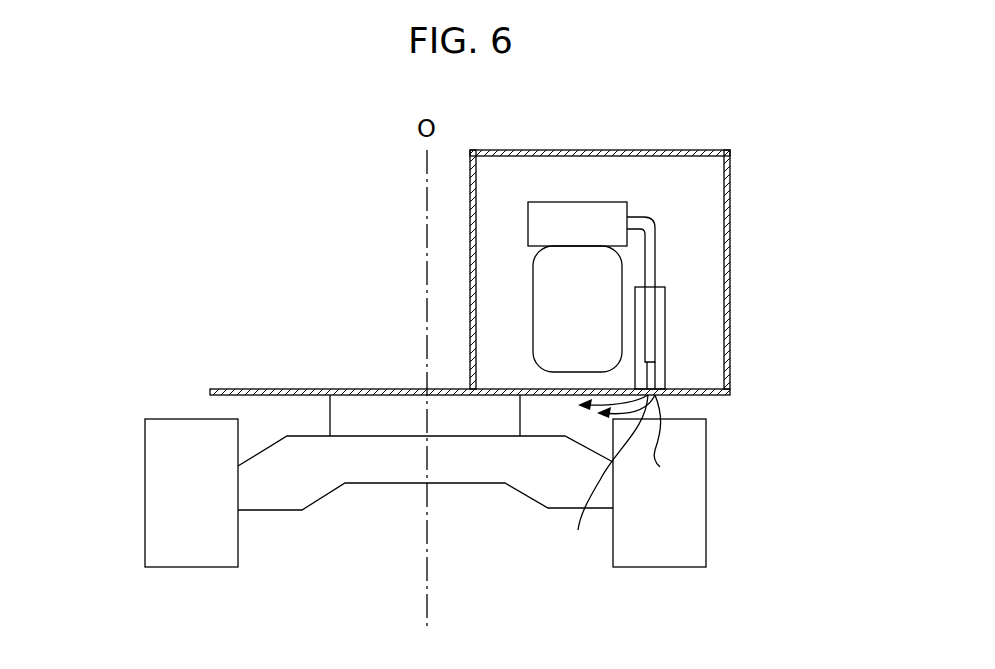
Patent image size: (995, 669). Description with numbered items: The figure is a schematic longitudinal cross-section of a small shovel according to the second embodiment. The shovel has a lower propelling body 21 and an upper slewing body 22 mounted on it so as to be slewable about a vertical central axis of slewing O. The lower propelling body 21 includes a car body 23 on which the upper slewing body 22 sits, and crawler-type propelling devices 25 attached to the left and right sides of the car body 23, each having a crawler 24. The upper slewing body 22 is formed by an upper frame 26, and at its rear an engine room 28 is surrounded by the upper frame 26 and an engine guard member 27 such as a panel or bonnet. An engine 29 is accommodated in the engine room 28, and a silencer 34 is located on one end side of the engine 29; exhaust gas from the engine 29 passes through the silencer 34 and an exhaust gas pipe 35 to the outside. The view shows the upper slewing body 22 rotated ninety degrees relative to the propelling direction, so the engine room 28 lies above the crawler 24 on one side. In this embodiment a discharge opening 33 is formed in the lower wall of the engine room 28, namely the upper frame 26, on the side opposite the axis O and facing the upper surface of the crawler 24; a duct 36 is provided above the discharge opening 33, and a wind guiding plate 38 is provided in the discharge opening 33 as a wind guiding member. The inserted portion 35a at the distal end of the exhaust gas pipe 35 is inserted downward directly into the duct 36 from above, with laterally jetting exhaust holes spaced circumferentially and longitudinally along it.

The lower propelling body 21 is at (722, 505).
The upper slewing body 22 is at (742, 252).
The car body 23 is at (462, 483).
The crawler 24 is at (162, 444).
The crawler-type propelling device 25 is at (195, 572).
The upper frame 26 is at (376, 389).
The engine guard member 27 is at (678, 150).
The engine room 28 is at (515, 182).
The engine 29 is at (533, 320).
The discharge opening 33 is at (605, 479).
The silencer 34 is at (605, 202).
The exhaust gas pipe 35 is at (657, 224).
The inserted portion 35a is at (658, 315).
The duct 36 is at (663, 372).
The wind guiding plate 38 is at (655, 454).